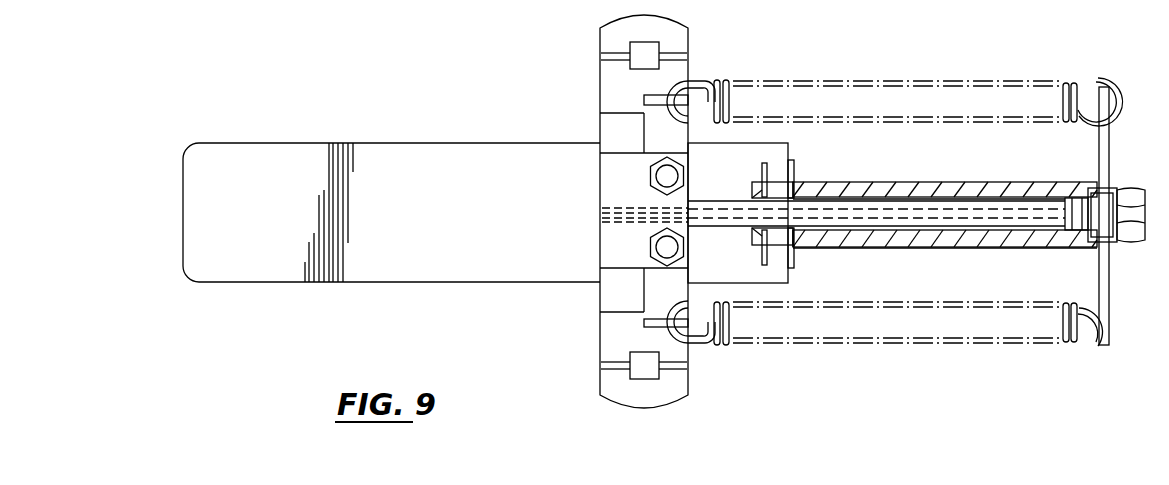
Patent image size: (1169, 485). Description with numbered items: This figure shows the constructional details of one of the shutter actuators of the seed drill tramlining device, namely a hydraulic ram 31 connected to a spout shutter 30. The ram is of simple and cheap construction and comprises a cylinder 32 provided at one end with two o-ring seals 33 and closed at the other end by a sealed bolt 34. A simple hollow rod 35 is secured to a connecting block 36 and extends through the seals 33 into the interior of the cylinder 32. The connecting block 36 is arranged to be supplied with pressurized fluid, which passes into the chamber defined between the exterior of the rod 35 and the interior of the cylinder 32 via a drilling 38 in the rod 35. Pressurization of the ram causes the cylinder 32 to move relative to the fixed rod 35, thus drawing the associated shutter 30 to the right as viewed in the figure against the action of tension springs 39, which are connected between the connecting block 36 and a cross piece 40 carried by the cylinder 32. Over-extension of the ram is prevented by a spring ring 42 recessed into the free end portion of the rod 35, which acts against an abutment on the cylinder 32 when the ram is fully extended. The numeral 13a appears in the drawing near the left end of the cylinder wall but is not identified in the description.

The spout shutter 30 is at (259, 150).
The connecting block 36 is at (615, 178).
The o-ring seals 33 is at (760, 236).
The cylinder 32 is at (858, 183).
The drilling 38 is at (922, 212).
The hollow rod 35 is at (995, 199).
The hydraulic ram 31 is at (900, 253).
The sleeve end 13a is at (807, 244).
The spring ring 42 is at (1075, 230).
The cross piece 40 is at (1099, 130).
The sealed bolt 34 is at (1131, 187).
The tension springs 39 is at (878, 80).